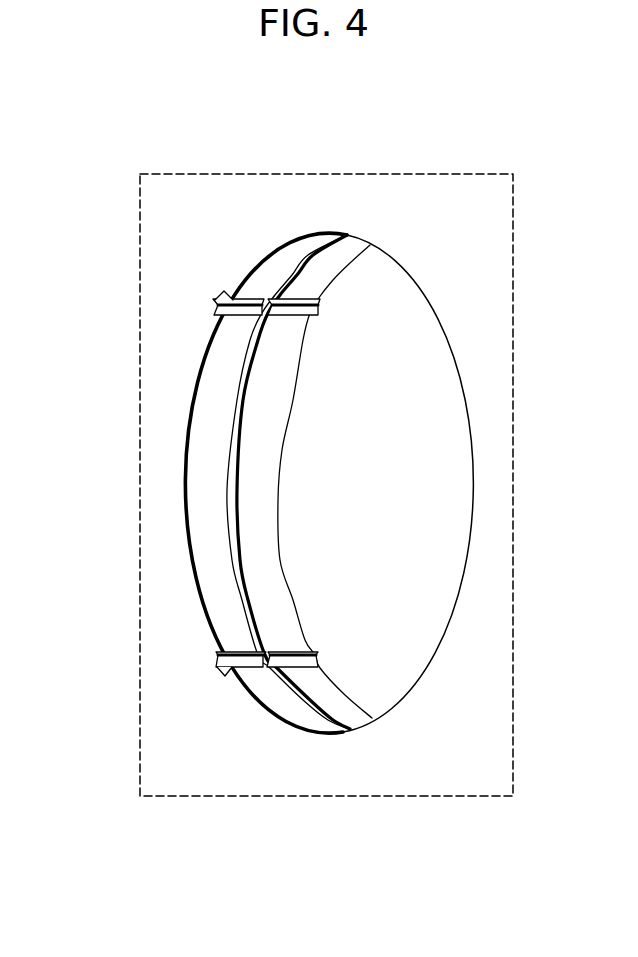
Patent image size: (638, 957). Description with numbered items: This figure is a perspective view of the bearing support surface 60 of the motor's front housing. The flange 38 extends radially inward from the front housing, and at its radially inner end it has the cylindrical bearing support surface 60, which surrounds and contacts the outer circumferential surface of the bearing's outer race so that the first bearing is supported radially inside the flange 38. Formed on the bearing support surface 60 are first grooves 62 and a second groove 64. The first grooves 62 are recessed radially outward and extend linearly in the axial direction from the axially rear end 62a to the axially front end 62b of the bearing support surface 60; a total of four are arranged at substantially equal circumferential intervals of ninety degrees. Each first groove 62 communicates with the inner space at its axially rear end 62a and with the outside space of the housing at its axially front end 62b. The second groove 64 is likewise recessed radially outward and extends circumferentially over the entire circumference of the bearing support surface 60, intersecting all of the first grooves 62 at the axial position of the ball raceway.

The flange 38 is at (318, 204).
The bearing support surface 60 is at (205, 468).
The first grooves 62 is at (242, 306).
The axially rear end 62a is at (316, 305).
The axially front end 62b is at (215, 297).
The second groove 64 is at (243, 379).